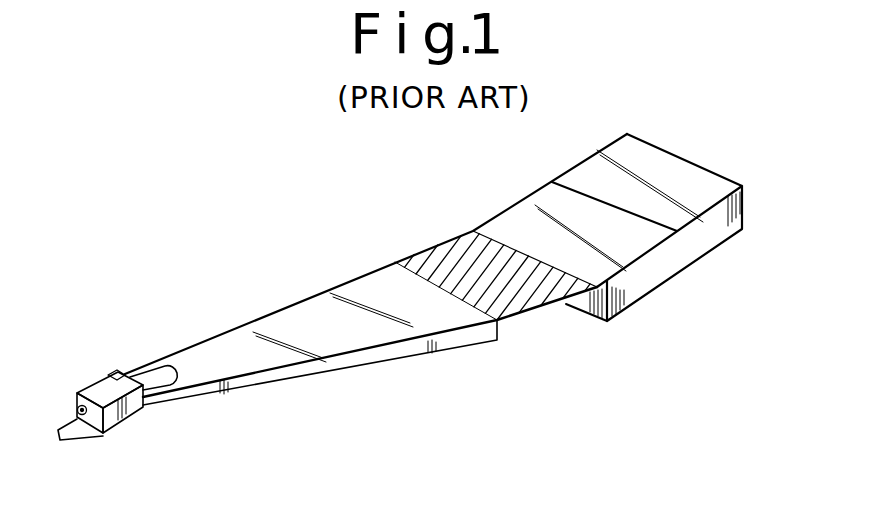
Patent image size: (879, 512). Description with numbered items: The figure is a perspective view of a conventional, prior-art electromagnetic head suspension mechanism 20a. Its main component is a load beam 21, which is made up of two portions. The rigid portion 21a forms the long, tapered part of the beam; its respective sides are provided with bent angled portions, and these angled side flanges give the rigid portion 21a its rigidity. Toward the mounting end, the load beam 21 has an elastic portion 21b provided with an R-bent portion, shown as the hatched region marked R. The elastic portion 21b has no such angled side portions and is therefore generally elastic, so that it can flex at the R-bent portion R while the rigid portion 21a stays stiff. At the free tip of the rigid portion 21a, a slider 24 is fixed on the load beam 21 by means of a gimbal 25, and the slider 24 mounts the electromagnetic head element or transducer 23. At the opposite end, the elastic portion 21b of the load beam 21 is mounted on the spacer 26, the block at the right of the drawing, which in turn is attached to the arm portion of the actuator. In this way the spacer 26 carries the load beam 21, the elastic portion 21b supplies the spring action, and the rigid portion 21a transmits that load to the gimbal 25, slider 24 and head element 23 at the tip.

The electromagnetic head suspension mechanism 20a is at (163, 251).
The load beam 21 is at (462, 199).
The rigid portion 21a is at (263, 357).
The elastic portion 21b is at (430, 248).
The R-bent portion R is at (542, 303).
The electromagnetic head element 23 is at (77, 408).
The slider 24 is at (125, 418).
The gimbal 25 is at (63, 440).
The spacer 26 is at (703, 244).